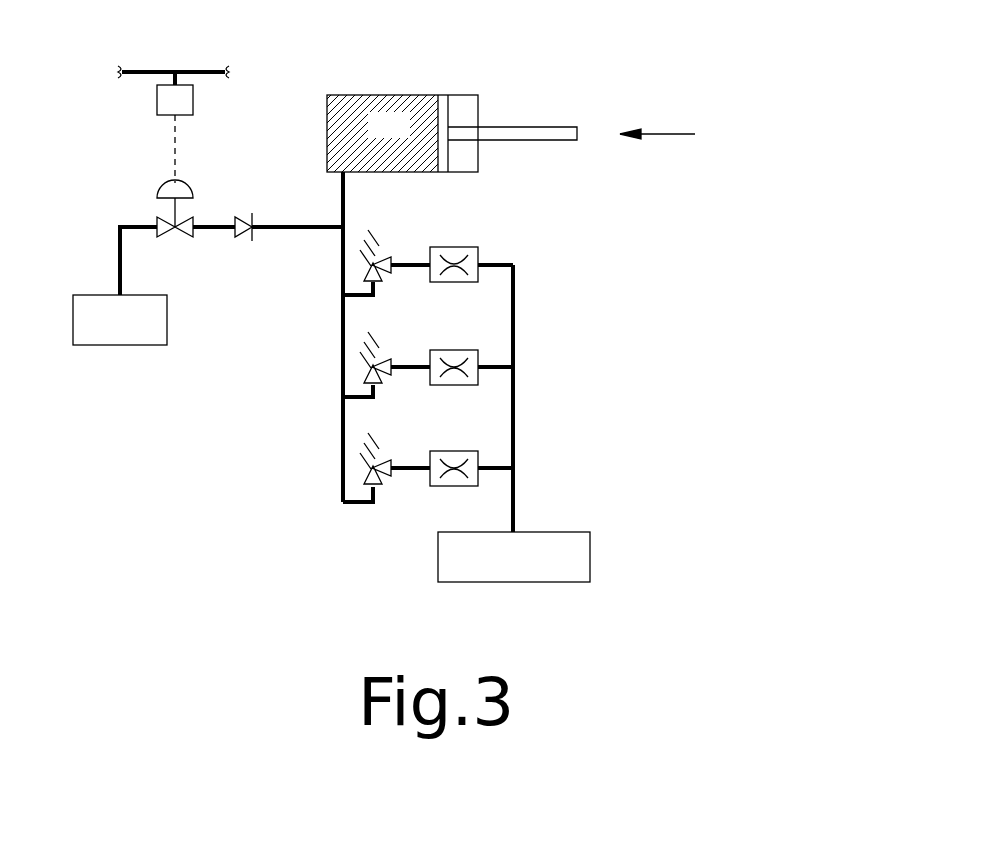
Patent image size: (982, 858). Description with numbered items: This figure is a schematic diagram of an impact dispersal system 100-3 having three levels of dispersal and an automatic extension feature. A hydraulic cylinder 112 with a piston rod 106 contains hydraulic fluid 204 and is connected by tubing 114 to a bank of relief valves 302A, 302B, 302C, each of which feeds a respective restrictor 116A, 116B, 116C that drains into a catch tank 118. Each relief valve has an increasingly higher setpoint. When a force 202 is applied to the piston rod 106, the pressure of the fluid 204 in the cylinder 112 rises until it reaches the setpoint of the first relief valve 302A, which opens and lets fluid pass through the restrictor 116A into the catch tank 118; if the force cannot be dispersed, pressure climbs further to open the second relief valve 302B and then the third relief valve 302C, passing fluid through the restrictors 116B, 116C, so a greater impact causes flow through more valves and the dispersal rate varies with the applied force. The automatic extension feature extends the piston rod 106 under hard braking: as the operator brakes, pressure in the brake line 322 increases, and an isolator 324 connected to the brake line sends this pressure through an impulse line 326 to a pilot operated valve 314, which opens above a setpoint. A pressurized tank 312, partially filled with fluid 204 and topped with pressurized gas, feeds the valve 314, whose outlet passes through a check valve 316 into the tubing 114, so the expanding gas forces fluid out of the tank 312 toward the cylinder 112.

The impact dispersal system 100-3 is at (628, 340).
The piston rod 106 is at (512, 127).
The hydraulic cylinder 112 is at (400, 95).
The tubing 114 is at (340, 313).
The restrictor 116A is at (455, 247).
The restrictor 116B is at (455, 350).
The restrictor 116C is at (455, 451).
The catch tank 118 is at (557, 583).
The force 202 is at (655, 134).
The hydraulic fluid 204 is at (409, 137).
The first relief valve 302A is at (385, 255).
The second relief valve 302B is at (385, 357).
The third relief valve 302C is at (385, 458).
The pressurized tank 312 is at (140, 346).
The pilot operated valve 314 is at (177, 236).
The check valve 316 is at (240, 212).
The brake line 322 is at (148, 68).
The isolator 324 is at (157, 100).
The impulse line 326 is at (170, 130).